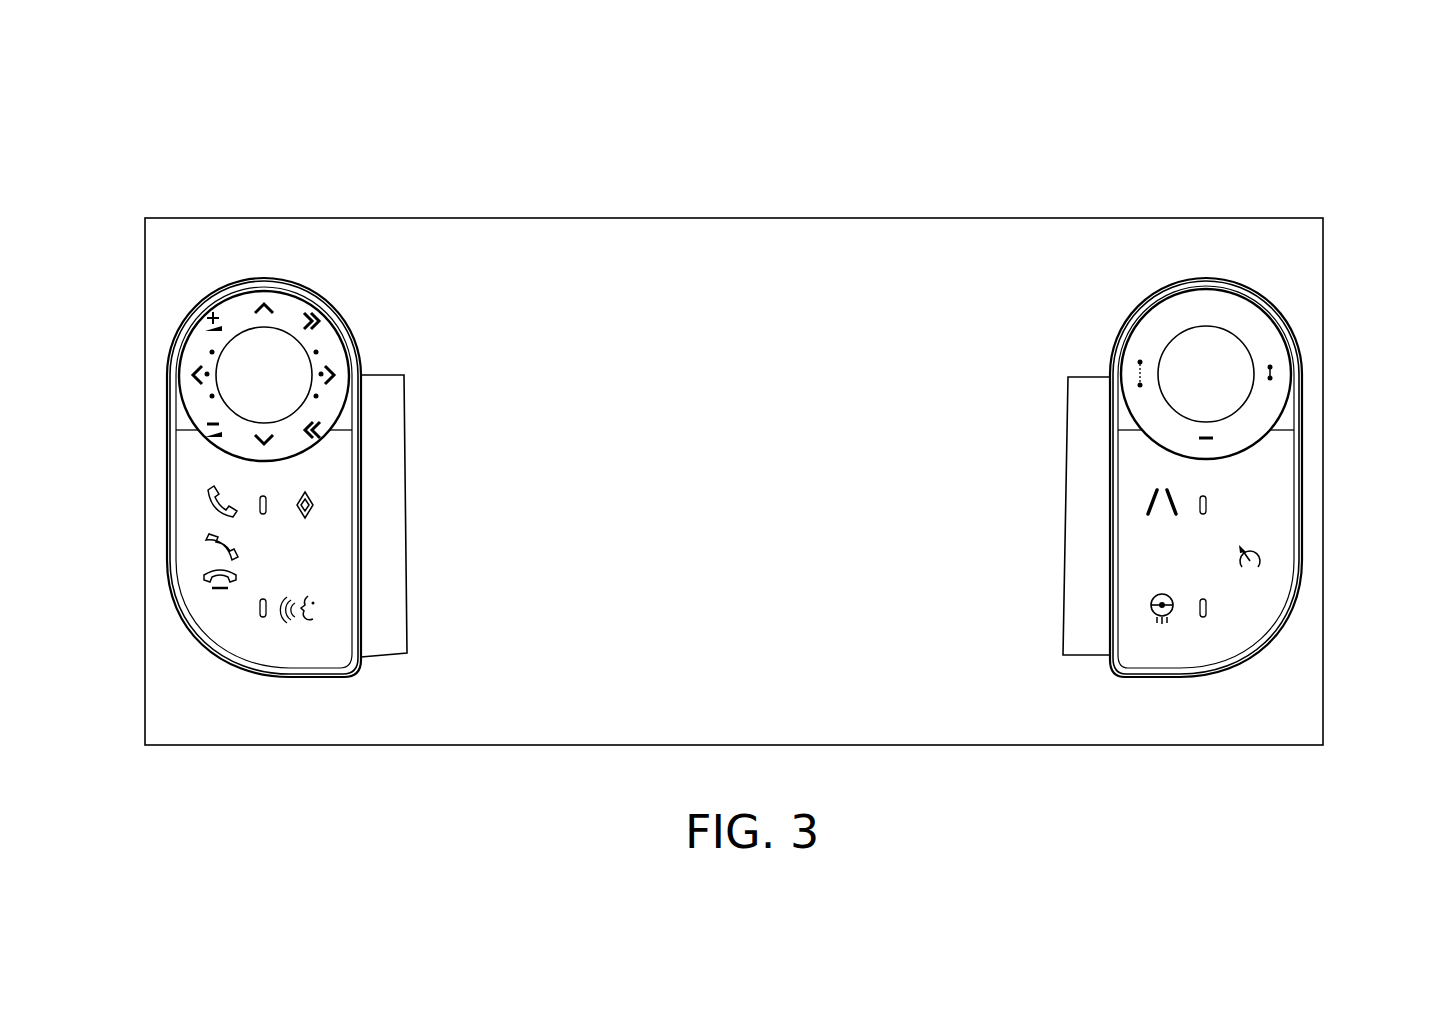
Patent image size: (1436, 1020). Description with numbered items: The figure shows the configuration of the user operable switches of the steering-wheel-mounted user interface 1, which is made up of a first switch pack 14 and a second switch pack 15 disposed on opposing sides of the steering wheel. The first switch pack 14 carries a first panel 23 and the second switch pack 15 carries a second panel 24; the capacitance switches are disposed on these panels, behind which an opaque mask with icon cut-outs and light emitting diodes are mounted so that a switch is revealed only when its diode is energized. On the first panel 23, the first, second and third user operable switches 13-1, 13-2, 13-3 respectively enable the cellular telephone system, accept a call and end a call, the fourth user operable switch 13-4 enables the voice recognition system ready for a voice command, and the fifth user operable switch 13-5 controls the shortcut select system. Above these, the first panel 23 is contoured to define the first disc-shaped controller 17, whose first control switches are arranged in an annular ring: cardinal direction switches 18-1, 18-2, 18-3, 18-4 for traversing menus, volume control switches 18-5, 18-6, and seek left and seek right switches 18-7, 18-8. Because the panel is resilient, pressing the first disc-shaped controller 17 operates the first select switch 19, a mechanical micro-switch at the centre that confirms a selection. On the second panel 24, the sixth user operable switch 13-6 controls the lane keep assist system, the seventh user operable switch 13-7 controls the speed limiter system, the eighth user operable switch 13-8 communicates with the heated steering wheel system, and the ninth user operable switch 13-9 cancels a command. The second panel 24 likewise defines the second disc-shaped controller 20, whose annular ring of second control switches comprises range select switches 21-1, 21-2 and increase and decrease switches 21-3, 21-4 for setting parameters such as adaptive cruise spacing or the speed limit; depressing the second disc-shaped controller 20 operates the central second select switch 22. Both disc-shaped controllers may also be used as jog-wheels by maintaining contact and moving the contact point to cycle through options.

The user interface 1 is at (1193, 180).
The first switch pack 14 is at (215, 273).
The second switch pack 15 is at (1260, 270).
The first disc-shaped controller 17 is at (326, 298).
The first select switch 19 is at (277, 342).
The second disc-shaped controller 20 is at (1286, 298).
The second select switch 22 is at (1233, 360).
The first panel 23 is at (224, 620).
The second panel 24 is at (1228, 625).
The cardinal direction switch 18-1 is at (195, 363).
The cardinal direction switch 18-2 is at (338, 367).
The cardinal direction switch 18-3 is at (262, 299).
The cardinal direction switch 18-4 is at (277, 437).
The volume control switch 18-5 is at (208, 404).
The volume control switch 18-6 is at (213, 322).
The seek left switch 18-7 is at (320, 316).
The seek right switch 18-8 is at (312, 413).
The range select switch 21-1 is at (1138, 360).
The range select switch 21-2 is at (1267, 372).
The increase switch 21-3 is at (1208, 293).
The decrease switch 21-4 is at (1213, 422).
The first user operable switch 13-1 is at (207, 533).
The second user operable switch 13-2 is at (207, 488).
The third user operable switch 13-3 is at (202, 577).
The fourth user operable switch 13-4 is at (322, 604).
The fifth user operable switch 13-5 is at (312, 497).
The sixth user operable switch 13-6 is at (1147, 496).
The seventh user operable switch 13-7 is at (1268, 560).
The eighth user operable switch 13-8 is at (1145, 594).
The ninth user operable switch 13-9 is at (1248, 490).